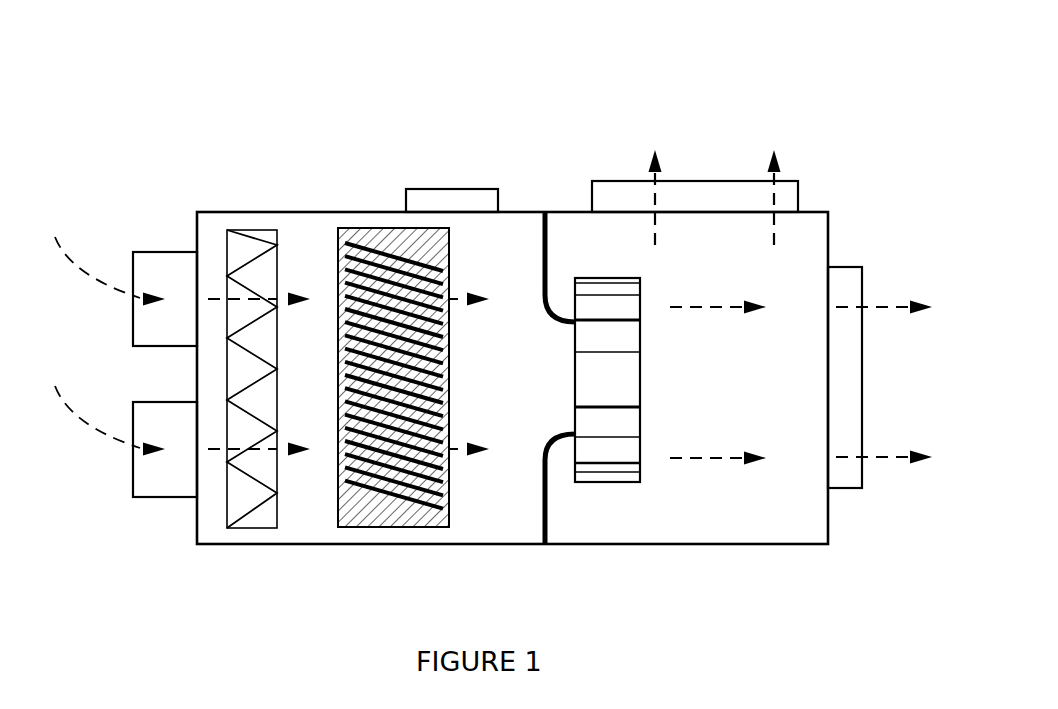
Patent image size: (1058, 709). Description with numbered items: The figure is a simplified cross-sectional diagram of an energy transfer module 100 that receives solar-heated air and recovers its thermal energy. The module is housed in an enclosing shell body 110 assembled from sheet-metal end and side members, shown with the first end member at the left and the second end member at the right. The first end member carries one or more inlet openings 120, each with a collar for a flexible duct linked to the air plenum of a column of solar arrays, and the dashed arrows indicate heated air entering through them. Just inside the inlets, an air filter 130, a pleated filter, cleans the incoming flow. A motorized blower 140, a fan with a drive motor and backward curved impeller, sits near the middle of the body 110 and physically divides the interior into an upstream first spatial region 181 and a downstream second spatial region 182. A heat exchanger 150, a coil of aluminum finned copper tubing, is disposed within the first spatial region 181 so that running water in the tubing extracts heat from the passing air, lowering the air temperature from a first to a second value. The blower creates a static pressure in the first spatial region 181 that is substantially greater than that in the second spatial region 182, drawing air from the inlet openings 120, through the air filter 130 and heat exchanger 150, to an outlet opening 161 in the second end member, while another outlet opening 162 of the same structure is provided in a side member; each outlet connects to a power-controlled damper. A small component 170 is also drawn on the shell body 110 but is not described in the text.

The energy transfer module 100 is at (660, 78).
The enclosing shell body 110 is at (321, 211).
The inlet openings 120 is at (175, 410).
The air filter 130 is at (252, 511).
The motorized blower 140 is at (607, 460).
The heat exchanger 150 is at (402, 511).
The outlet opening 161 is at (862, 267).
The outlet opening 162 is at (798, 184).
The controller 170 is at (475, 197).
The first spatial region 181 is at (369, 388).
The second spatial region 182 is at (718, 357).